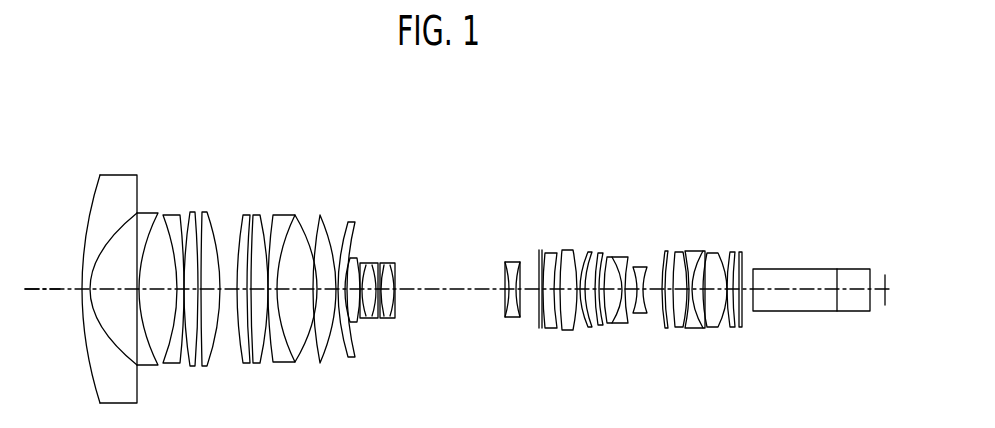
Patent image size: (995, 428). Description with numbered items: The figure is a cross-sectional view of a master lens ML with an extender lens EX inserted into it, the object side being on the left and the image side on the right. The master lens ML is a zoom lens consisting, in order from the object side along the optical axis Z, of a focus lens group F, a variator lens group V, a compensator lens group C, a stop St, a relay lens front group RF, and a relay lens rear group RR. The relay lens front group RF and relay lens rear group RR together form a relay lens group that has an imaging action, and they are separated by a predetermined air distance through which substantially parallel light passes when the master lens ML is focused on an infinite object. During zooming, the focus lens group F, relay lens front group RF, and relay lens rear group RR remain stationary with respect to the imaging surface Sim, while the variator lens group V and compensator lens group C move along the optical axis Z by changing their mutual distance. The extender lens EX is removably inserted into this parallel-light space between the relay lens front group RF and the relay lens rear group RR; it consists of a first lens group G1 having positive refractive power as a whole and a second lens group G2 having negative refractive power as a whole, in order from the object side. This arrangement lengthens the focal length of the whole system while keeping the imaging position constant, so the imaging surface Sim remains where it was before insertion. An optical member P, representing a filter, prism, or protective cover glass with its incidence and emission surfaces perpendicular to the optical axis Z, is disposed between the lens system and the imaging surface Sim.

The optical axis Z is at (42, 287).
The master lens ML is at (737, 102).
The focus lens group F is at (357, 155).
The variator lens group V is at (398, 242).
The compensator lens group C is at (520, 240).
The stop St is at (540, 258).
The relay lens front group RF is at (575, 242).
The extender lens EX is at (667, 370).
The first lens group G1 is at (630, 328).
The second lens group G2 is at (648, 328).
The relay lens rear group RR is at (738, 242).
The optical member P is at (870, 242).
The imaging surface Sim is at (886, 298).